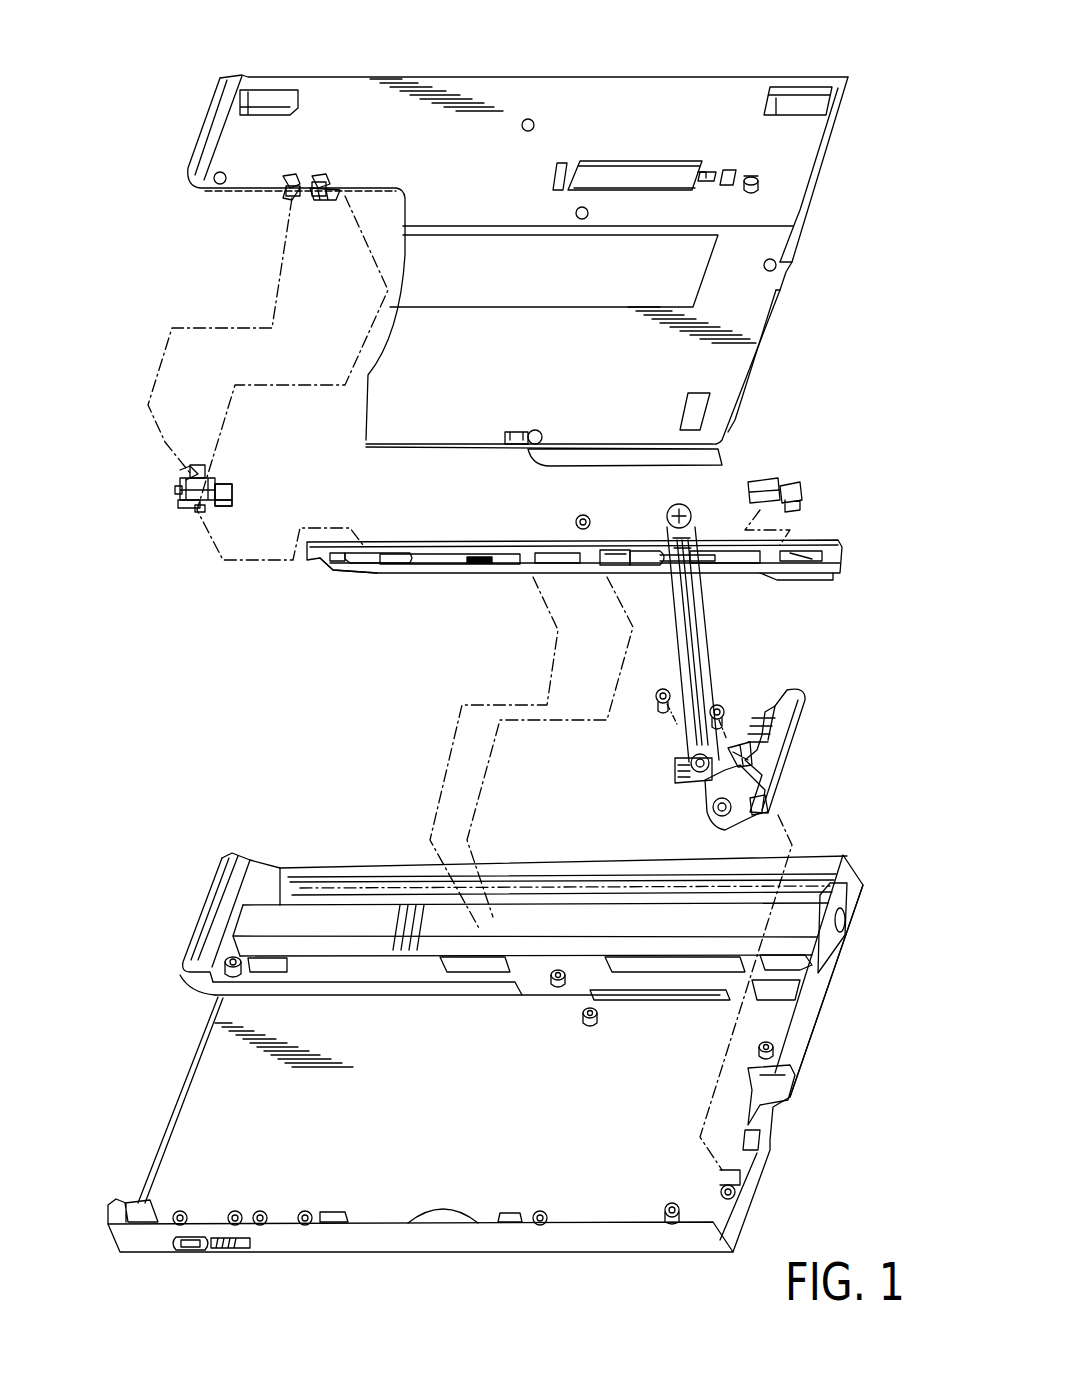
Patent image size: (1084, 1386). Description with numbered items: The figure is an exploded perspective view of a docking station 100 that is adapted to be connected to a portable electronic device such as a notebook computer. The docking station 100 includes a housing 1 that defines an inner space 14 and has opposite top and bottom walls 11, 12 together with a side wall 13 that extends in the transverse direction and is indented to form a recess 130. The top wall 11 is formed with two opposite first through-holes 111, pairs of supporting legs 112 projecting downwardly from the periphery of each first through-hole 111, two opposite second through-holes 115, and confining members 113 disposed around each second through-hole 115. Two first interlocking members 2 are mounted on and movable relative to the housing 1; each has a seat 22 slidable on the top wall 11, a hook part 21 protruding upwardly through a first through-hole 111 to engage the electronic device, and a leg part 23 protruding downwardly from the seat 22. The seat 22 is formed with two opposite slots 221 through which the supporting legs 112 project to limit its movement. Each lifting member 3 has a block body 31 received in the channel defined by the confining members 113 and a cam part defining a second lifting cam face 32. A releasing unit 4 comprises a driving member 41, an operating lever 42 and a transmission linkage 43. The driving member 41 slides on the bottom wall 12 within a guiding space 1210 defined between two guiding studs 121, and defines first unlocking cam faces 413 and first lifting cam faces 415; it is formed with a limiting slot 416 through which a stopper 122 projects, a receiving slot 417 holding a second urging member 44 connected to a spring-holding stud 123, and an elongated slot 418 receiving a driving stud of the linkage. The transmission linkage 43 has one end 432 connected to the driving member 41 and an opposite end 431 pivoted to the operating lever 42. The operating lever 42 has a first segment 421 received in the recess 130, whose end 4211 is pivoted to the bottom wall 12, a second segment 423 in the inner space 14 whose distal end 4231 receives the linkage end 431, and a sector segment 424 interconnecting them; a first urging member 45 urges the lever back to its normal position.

The docking station 100 is at (162, 59).
The housing 1 is at (830, 70).
The top wall 11 is at (598, 75).
The first through-holes 111 is at (290, 185).
The supporting legs 112 is at (283, 196).
The confining members 113 is at (345, 195).
The second through-holes 115 is at (325, 178).
The bottom wall 12 is at (200, 1120).
The guiding studs 121 is at (330, 980).
The guiding space 1210 is at (287, 967).
The stopper 122 is at (557, 968).
The spring-holding stud 123 is at (500, 945).
The side wall 13 is at (780, 1033).
The recess 130 is at (762, 1105).
The inner space 14 is at (250, 1096).
The first interlocking members 2 is at (158, 507).
The hook part 21 is at (180, 470).
The seat 22 is at (178, 505).
The leg part 23 is at (195, 512).
The slots 221 is at (203, 477).
The lifting member 3 is at (240, 507).
The block body 31 is at (222, 490).
The second lifting cam face 32 is at (222, 500).
The releasing unit 4 is at (822, 653).
The driving member 41 is at (845, 541).
The first unlocking cam faces 413 is at (333, 575).
The first lifting cam faces 415 is at (347, 560).
The limiting slot 416 is at (612, 563).
The receiving slot 417 is at (565, 555).
The elongated slot 418 is at (718, 553).
The second urging member 44 is at (488, 566).
The operating lever 42 is at (797, 770).
The first segment 421 is at (785, 735).
The end of first segment 4211 is at (770, 799).
The second segment 423 is at (727, 833).
The end of second segment 4231 is at (723, 810).
The sector segment 424 is at (675, 768).
The transmission linkage 43 is at (712, 667).
The opposite end of transmission linkage 431 is at (690, 763).
The one end of transmission linkage 432 is at (662, 508).
The first urging member 45 is at (740, 740).